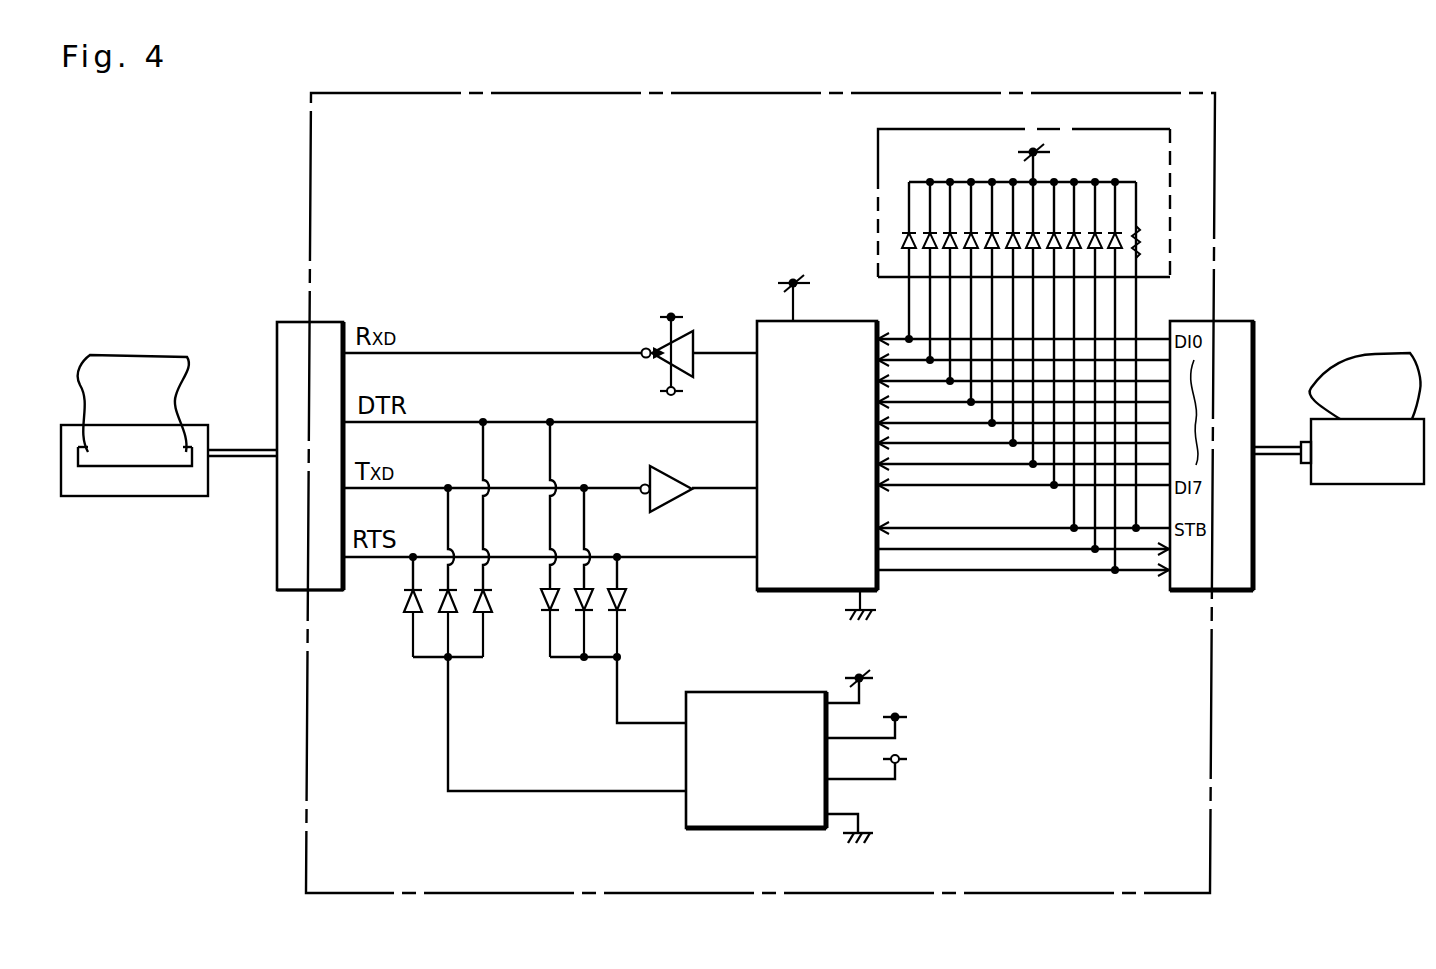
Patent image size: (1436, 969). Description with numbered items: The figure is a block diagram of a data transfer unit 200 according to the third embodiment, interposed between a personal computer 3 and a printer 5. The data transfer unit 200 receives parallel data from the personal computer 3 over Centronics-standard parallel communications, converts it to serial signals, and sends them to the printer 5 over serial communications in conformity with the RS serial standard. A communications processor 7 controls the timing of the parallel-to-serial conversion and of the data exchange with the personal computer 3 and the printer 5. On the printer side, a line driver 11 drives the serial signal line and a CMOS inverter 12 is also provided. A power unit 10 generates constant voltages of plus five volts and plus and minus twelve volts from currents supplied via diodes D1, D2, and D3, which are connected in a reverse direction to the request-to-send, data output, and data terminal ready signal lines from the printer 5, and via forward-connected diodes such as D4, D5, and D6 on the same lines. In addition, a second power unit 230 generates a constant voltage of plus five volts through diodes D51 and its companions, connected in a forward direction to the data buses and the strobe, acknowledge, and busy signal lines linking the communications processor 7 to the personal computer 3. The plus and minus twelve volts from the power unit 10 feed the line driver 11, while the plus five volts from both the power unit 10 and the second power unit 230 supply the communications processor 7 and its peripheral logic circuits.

The data transfer unit 200 is at (1063, 94).
The second power unit 230 is at (943, 343).
The diode D51 is at (928, 376).
The communications processor 7 is at (803, 312).
The line driver 11 is at (697, 333).
The CMOS inverter 12 is at (670, 471).
The power unit 10 is at (720, 829).
The printer 5 is at (165, 497).
The personal computer 3 is at (1397, 485).
The diode D1 is at (401, 603).
The diode D2 is at (440, 614).
The diode D3 is at (485, 614).
The diode D4 is at (540, 593).
The diode D5 is at (582, 612).
The diode D6 is at (625, 597).